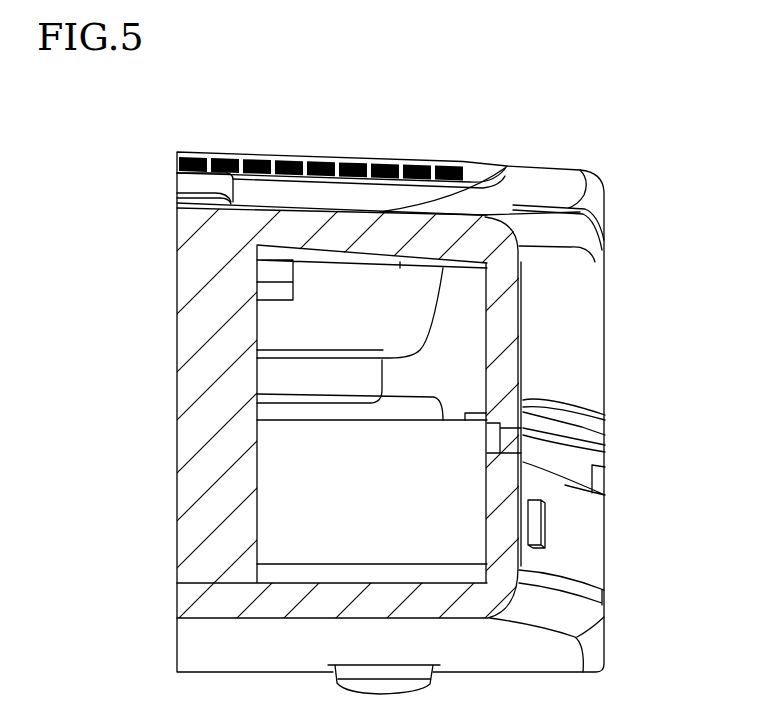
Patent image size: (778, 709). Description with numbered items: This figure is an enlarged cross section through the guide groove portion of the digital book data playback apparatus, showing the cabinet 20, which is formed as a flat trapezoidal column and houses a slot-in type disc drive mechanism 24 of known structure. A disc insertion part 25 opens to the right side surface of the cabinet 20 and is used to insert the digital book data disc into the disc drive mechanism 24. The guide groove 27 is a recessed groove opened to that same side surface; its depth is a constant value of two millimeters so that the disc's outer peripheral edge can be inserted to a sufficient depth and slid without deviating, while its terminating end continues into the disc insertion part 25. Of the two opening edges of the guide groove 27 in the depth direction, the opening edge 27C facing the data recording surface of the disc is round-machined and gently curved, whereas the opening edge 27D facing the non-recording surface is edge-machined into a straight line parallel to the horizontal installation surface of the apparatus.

The cabinet 20 is at (572, 297).
The disc drive mechanism 24 is at (582, 523).
The disc insertion part 25 is at (568, 477).
The guide groove 27 is at (500, 444).
The opening edge 27C is at (516, 458).
The opening edge 27D is at (518, 445).